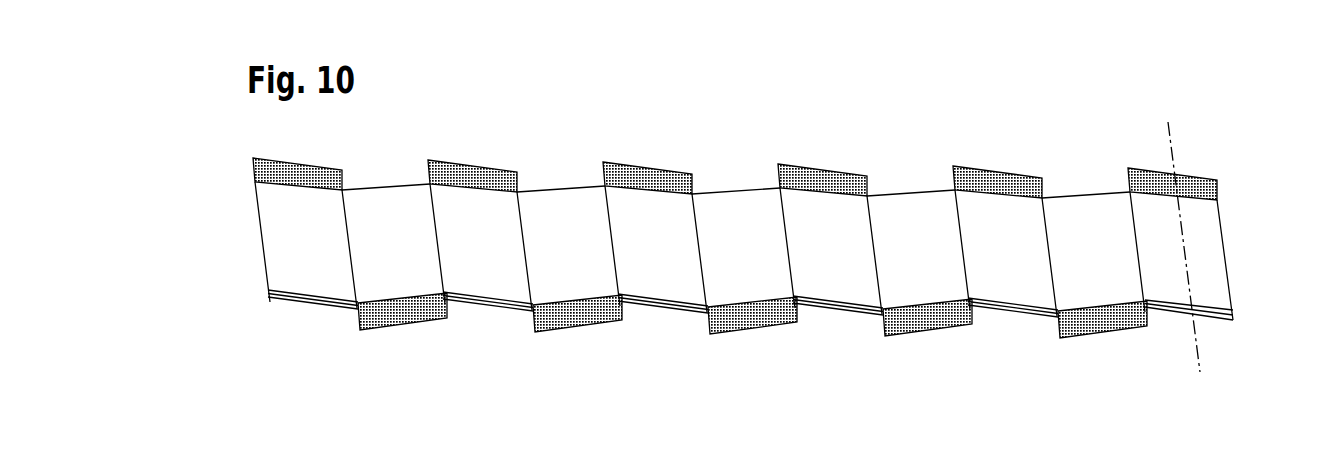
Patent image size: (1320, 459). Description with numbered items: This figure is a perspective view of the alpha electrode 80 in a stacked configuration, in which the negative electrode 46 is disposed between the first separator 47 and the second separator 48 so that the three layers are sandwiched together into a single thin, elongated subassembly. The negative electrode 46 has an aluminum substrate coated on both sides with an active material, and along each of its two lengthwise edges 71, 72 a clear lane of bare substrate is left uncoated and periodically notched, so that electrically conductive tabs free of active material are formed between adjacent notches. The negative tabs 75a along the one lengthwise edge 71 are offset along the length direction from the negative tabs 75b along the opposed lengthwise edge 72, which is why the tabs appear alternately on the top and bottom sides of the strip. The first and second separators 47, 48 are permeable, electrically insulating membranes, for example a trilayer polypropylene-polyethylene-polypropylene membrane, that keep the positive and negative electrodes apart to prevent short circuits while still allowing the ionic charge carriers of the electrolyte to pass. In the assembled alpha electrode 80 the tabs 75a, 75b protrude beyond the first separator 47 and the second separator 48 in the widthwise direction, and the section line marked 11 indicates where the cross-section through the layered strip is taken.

The alpha electrode 80 is at (785, 241).
The negative tabs 75a is at (470, 160).
The negative tabs 75b is at (430, 325).
The lengthwise edge 71 is at (650, 163).
The lengthwise edge 72 is at (610, 327).
The first separator 47 is at (1212, 255).
The negative electrode 46 is at (1233, 311).
The second separator 48 is at (1212, 318).
The section line 11 is at (1185, 357).